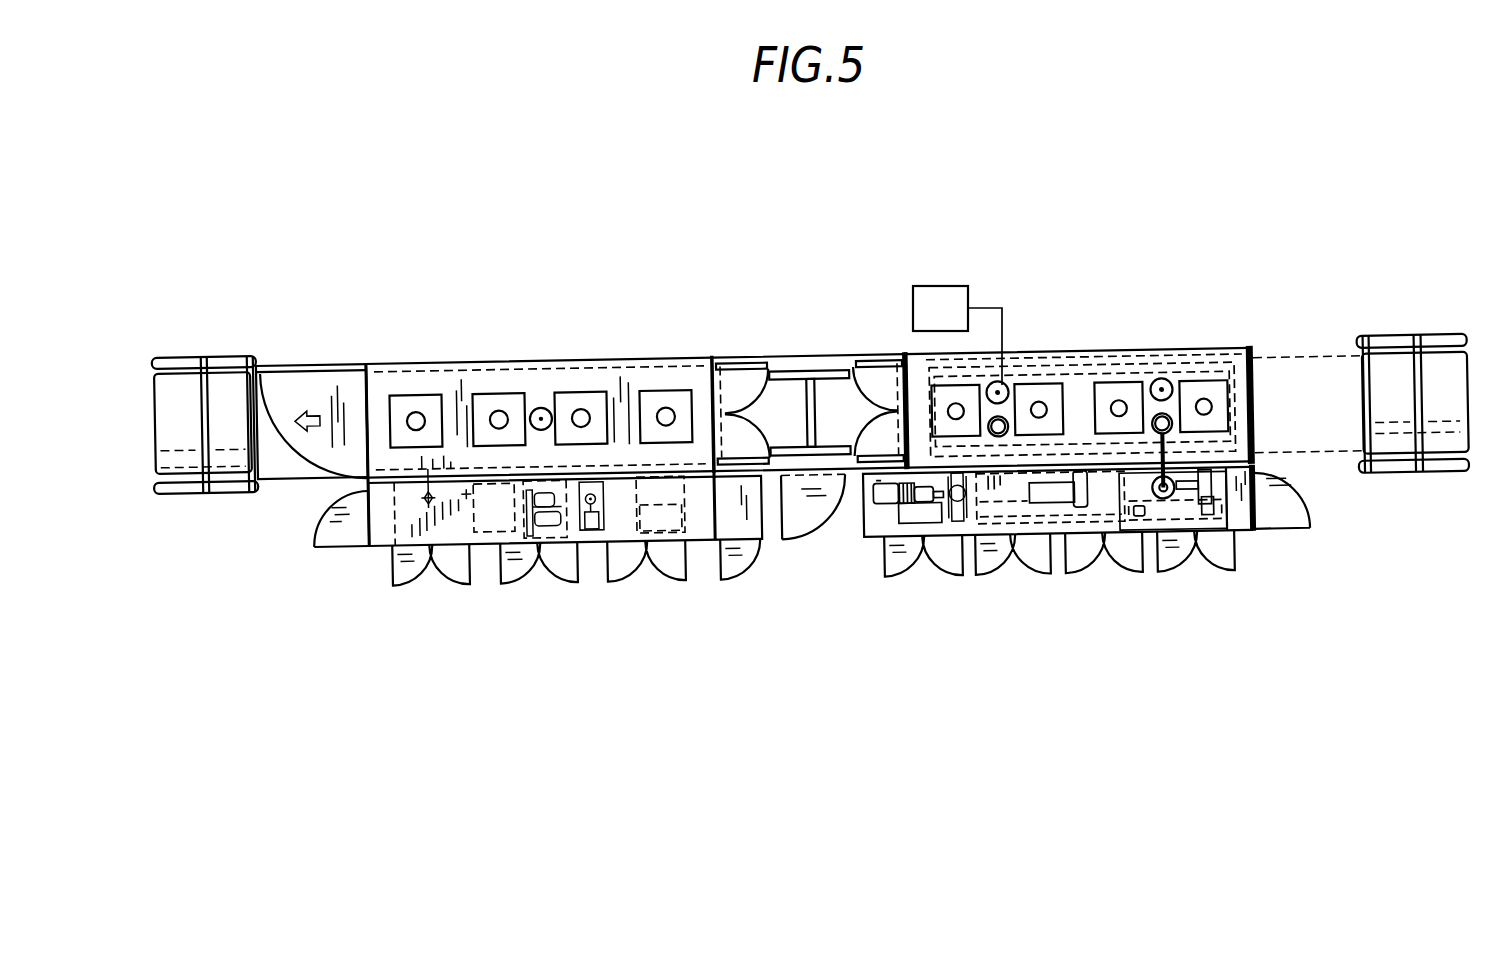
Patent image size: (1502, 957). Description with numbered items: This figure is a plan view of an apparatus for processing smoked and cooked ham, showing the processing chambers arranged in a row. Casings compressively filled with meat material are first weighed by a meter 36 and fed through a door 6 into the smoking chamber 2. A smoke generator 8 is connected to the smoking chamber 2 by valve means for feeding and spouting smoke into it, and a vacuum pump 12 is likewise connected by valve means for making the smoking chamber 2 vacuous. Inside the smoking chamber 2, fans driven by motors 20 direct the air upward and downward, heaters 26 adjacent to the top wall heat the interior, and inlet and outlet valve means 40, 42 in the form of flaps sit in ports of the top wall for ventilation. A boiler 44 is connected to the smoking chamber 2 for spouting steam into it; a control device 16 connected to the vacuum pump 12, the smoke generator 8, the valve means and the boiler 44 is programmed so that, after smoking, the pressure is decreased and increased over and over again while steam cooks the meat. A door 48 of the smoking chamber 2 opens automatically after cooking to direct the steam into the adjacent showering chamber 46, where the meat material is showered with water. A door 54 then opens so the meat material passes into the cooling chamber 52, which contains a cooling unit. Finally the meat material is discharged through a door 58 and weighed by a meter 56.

The smoking chamber 2 is at (1192, 350).
The door 6 is at (1257, 393).
The smoke generator 8 is at (1033, 493).
The vacuum pump 12 is at (883, 503).
The control device 16 is at (1242, 513).
The motors 20 is at (1040, 405).
The heaters 26 is at (1123, 358).
The meter 36 is at (1457, 398).
The inlet valve means 40 is at (997, 386).
The outlet valve means 42 is at (1173, 426).
The boiler 44 is at (939, 298).
The showering chamber 46 is at (793, 355).
The door 48 is at (876, 365).
The cooling chamber 52 is at (628, 358).
The door 54 is at (737, 366).
The meter 56 is at (224, 387).
The door 58 is at (310, 365).